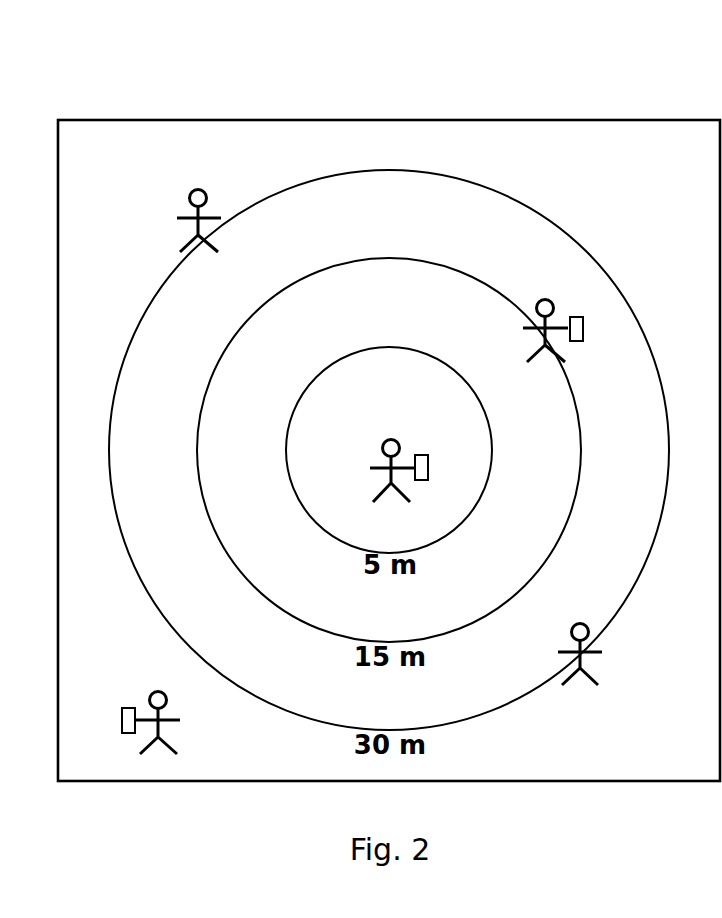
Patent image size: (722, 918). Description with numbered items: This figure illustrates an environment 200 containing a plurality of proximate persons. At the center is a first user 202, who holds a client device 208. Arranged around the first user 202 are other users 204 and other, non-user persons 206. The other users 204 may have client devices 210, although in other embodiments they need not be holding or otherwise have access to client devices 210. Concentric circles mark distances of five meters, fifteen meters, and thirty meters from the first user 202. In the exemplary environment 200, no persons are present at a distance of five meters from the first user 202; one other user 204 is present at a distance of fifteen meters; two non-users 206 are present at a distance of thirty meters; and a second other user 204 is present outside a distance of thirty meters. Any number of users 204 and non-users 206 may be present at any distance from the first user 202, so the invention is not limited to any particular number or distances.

The environment 200 is at (98, 112).
The first user 202 is at (391, 439).
The other users 204 is at (545, 299).
The non-user persons 206 is at (198, 189).
The client device 208 is at (426, 455).
The client devices 210 is at (577, 317).